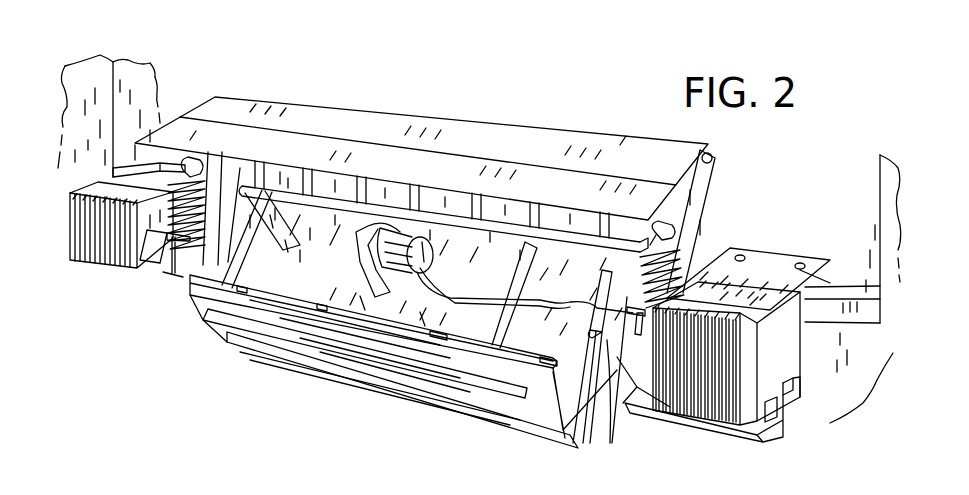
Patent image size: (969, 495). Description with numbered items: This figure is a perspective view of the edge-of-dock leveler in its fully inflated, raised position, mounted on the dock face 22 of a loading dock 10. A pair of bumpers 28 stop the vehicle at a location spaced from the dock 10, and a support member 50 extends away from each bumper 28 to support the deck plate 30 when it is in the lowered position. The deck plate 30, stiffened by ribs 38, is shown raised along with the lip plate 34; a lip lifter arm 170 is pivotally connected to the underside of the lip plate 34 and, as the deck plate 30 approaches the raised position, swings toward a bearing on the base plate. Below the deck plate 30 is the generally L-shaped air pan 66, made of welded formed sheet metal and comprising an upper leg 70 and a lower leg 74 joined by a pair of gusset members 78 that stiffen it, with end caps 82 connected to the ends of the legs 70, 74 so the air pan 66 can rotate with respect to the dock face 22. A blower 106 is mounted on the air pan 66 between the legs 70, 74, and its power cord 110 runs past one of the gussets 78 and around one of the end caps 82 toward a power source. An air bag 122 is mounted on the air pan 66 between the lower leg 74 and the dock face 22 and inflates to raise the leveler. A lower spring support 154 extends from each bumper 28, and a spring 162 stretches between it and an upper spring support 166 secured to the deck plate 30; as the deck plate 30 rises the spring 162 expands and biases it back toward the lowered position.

The loading dock 10 is at (99, 156).
The dock face 22 is at (369, 430).
The bumpers 28 is at (85, 257).
The deck plate 30 is at (713, 197).
The lip plate 34 is at (527, 152).
The ribs 38 is at (372, 186).
The support member 50 is at (172, 274).
The air pan 66 is at (278, 362).
The upper leg 70 is at (312, 235).
The lower leg 74 is at (360, 300).
The gusset members 78 is at (248, 264).
The end caps 82 is at (612, 345).
The blower 106 is at (405, 225).
The power cord 110 is at (417, 305).
The air bag 122 is at (497, 390).
The lower spring support 154 is at (142, 268).
The spring 162 is at (181, 165).
The upper spring support 166 is at (190, 162).
The lip lifter arm 170 is at (262, 163).